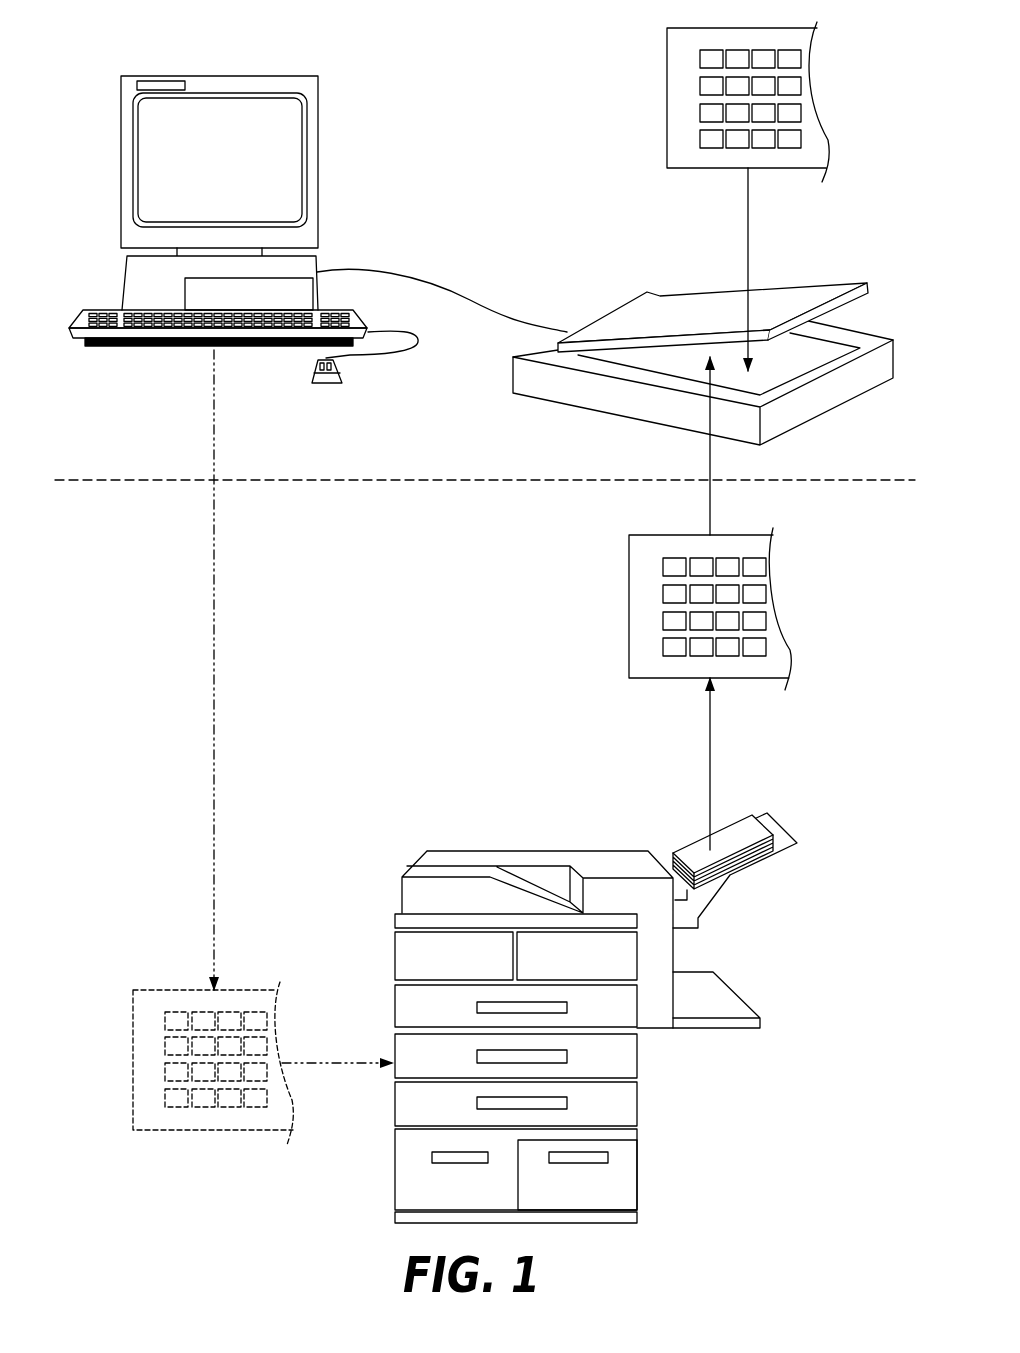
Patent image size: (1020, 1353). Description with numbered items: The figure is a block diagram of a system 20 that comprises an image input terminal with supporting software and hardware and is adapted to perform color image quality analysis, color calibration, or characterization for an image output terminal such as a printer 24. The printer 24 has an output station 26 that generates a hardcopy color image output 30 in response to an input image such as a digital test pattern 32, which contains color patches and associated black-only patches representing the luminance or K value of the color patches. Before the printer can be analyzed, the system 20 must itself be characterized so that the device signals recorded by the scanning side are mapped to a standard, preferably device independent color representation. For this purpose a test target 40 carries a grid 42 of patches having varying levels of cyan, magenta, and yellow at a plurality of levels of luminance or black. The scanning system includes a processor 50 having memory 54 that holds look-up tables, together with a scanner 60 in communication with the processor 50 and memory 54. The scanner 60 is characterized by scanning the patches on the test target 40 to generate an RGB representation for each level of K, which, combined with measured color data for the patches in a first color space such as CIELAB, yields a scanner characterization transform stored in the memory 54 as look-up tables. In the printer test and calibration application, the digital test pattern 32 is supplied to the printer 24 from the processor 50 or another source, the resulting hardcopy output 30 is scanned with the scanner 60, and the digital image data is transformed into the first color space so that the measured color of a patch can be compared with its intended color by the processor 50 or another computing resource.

The system 20 is at (485, 611).
The printer 24 is at (487, 850).
The output station 26 is at (772, 822).
The hardcopy color image output 30 is at (629, 608).
The digital test pattern 32 is at (237, 990).
The test target 40 is at (719, 137).
The grid of patches 42 is at (667, 52).
The processor 50 is at (318, 122).
The memory 54 is at (107, 348).
The scanner 60 is at (622, 323).